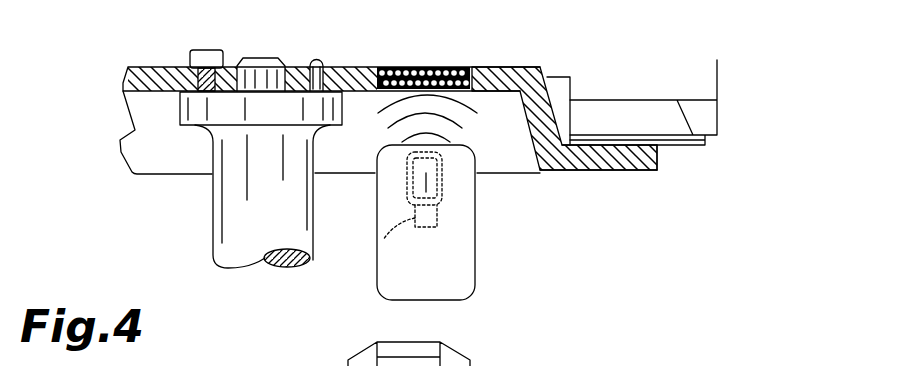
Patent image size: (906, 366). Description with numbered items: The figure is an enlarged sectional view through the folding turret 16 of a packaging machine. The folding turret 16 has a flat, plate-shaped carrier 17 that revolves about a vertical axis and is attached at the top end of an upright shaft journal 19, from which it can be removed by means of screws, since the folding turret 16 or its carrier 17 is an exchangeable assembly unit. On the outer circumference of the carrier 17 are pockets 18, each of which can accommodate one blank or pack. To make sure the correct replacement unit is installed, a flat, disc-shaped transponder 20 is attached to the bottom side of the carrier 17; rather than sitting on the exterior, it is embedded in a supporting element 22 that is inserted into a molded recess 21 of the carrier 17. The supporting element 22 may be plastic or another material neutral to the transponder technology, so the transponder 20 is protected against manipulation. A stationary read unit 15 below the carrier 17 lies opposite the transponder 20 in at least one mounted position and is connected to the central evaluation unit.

The read unit 15 is at (463, 285).
The folding turret 16 is at (676, 226).
The carrier 17 is at (582, 198).
The pockets 18 is at (696, 168).
The shaft journal 19 is at (235, 253).
The transponder 20 is at (427, 66).
The recess 21 is at (478, 80).
The supporting element 22 is at (383, 67).